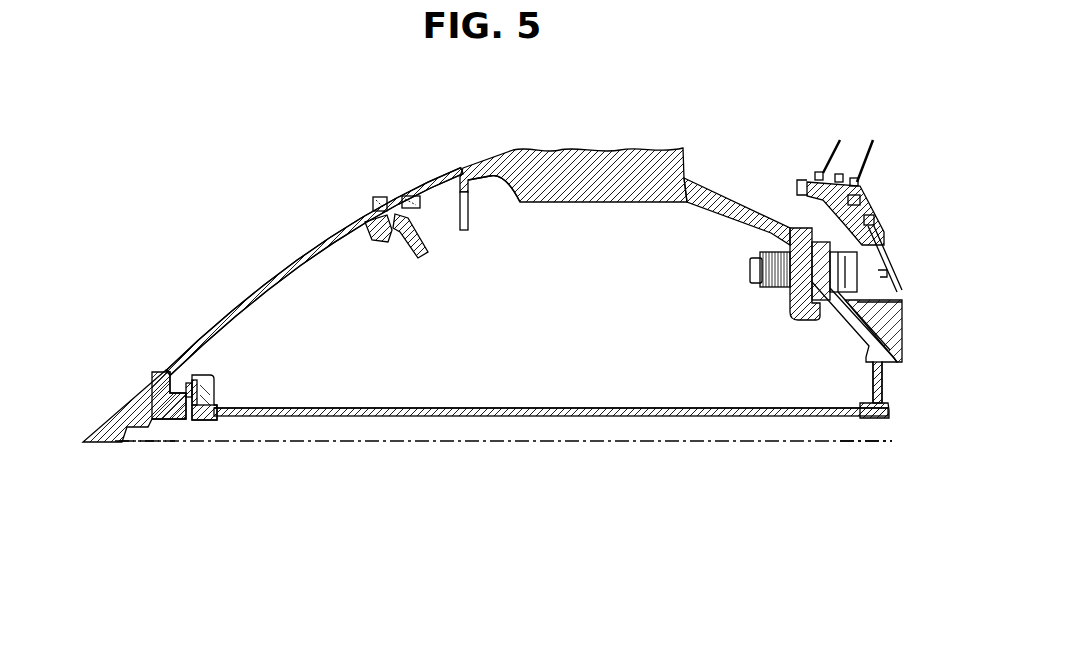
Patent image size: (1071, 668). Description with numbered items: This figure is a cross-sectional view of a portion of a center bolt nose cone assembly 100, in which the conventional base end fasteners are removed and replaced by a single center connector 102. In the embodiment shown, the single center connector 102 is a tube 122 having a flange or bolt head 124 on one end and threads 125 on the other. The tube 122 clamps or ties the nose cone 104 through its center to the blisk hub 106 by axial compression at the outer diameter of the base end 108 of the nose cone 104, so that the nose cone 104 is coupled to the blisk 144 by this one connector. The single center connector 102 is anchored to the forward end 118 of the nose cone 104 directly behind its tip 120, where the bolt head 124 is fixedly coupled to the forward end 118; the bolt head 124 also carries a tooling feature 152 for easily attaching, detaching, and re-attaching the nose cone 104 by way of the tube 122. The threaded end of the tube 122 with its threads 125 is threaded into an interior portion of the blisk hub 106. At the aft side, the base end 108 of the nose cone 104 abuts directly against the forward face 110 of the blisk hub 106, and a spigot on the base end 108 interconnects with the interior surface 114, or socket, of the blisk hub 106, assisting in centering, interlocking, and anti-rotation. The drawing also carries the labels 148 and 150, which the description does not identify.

The nose cone assembly 100 is at (150, 482).
The single center connector 102 is at (332, 407).
The nose cone 104 is at (314, 272).
The blisk hub 106 is at (503, 148).
The base end 108 is at (452, 158).
The forward face 110 is at (446, 176).
The interior surface 114 is at (283, 288).
The forward end 118 is at (138, 410).
The tip 120 is at (110, 418).
The tube 122 is at (278, 407).
The bolt head 124 is at (211, 432).
The threads 125 is at (890, 415).
The blisk 144 is at (668, 150).
The outer layer 148 is at (318, 250).
The second location 150 is at (858, 430).
The tooling feature 152 is at (168, 441).